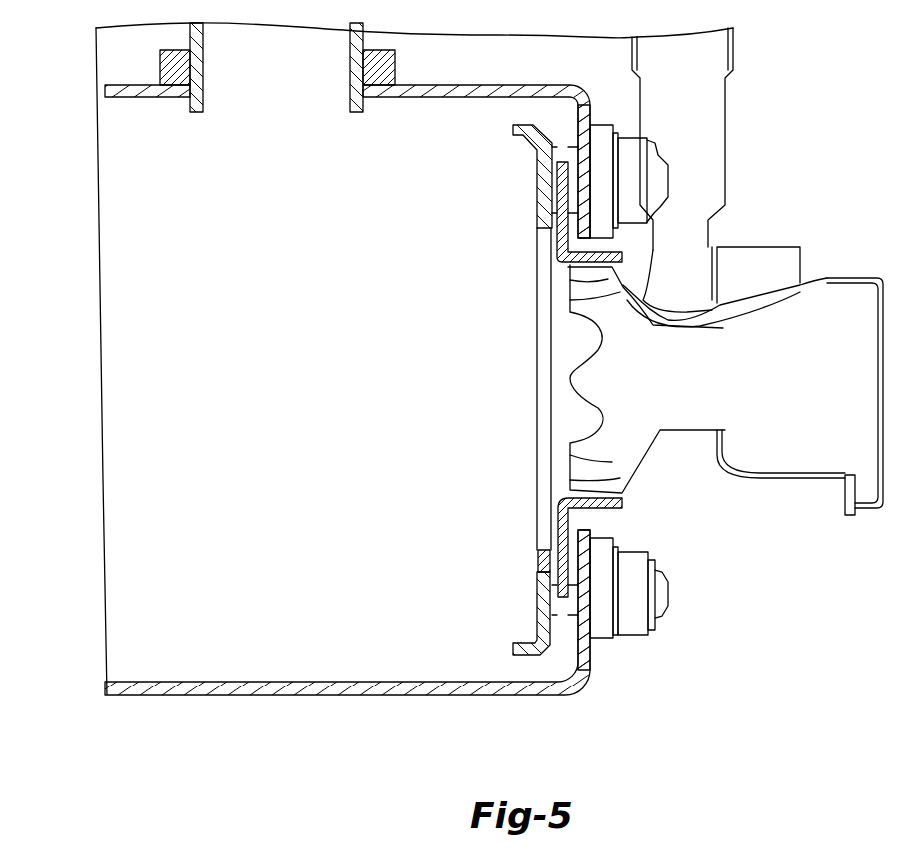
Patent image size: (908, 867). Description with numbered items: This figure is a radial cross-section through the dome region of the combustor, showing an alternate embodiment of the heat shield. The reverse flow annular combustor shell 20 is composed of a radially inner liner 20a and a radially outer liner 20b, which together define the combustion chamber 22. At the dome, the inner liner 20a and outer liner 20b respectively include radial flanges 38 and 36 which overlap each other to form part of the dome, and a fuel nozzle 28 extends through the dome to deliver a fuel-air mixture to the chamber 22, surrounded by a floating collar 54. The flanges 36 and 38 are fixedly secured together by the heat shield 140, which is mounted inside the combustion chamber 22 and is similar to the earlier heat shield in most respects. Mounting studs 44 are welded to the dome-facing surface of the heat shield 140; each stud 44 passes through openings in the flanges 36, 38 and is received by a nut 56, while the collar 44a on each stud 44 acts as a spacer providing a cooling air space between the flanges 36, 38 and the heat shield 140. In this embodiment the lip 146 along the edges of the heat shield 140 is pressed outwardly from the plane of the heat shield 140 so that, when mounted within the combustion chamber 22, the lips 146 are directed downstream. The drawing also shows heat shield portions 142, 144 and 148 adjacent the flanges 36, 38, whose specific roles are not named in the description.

The combustor shell 20 is at (377, 406).
The radially inner liner 20a is at (255, 693).
The radially outer liner 20b is at (478, 98).
The combustion chamber 22 is at (313, 282).
The fuel nozzle 28 is at (680, 442).
The radial flange 36 is at (587, 655).
The radial flange 38 is at (587, 117).
The mounting stud 44 is at (632, 640).
The collar 44a is at (565, 625).
The floating collar 54 is at (541, 290).
The nut 56 is at (635, 565).
The heat shield 140 is at (522, 586).
The retainer arm 142 is at (558, 255).
The upper flange 144 is at (563, 157).
The lip 146 is at (519, 137).
The retainer bracket 148 is at (556, 552).